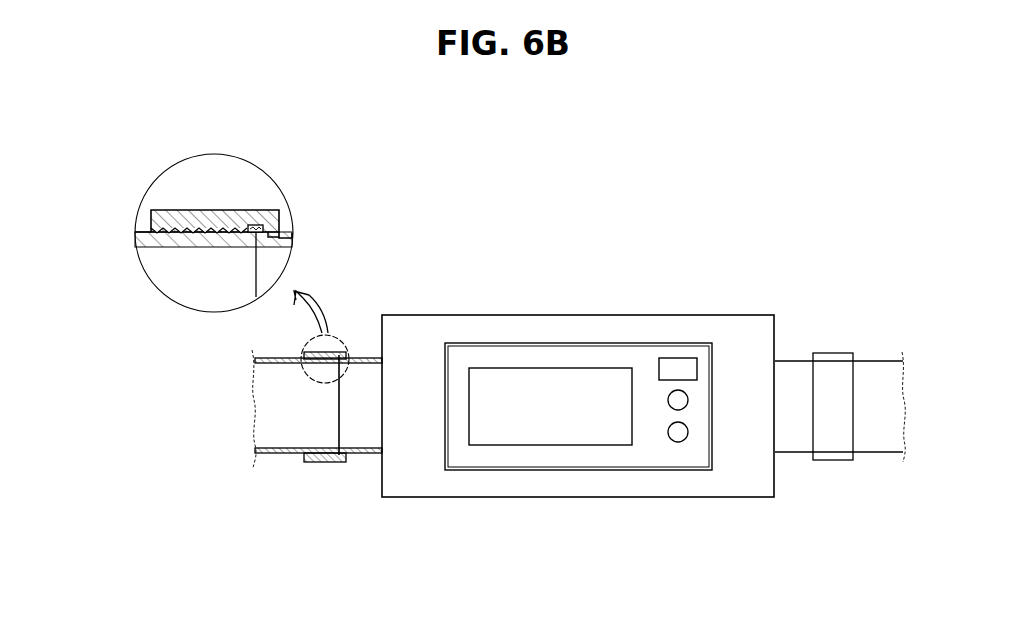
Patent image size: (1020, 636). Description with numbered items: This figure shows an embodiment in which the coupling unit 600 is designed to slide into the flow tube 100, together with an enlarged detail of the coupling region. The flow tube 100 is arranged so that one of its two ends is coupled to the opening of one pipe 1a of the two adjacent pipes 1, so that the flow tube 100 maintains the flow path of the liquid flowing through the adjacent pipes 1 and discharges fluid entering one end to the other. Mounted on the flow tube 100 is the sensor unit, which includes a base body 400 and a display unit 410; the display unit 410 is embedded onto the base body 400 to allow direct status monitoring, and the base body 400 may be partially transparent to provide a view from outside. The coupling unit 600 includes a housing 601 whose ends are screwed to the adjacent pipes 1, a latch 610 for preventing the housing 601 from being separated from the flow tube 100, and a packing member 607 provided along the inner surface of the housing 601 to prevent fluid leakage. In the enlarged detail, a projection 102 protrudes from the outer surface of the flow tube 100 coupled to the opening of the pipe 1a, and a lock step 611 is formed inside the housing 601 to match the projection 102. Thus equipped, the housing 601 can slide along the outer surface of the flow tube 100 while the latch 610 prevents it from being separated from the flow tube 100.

The pipes 1 is at (272, 458).
The pipe 1a is at (178, 243).
The flow tube 100 is at (561, 446).
The projection 102 is at (265, 243).
The base body 400 is at (658, 492).
The display unit 410 is at (563, 462).
The coupling unit 600 is at (313, 466).
The housing 601 is at (200, 217).
The packing member 607 is at (256, 224).
The latch 610 is at (283, 231).
The lock step 611 is at (290, 236).